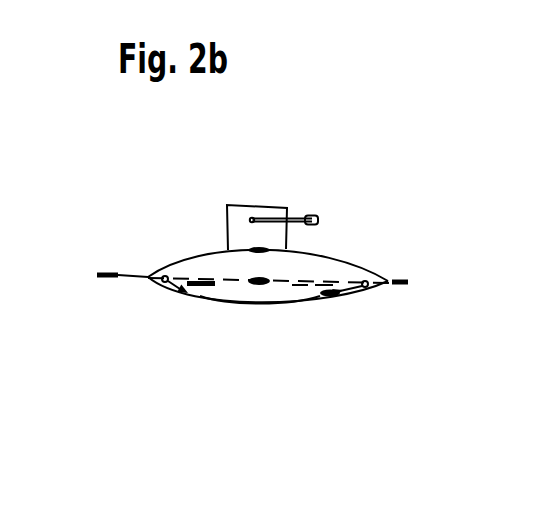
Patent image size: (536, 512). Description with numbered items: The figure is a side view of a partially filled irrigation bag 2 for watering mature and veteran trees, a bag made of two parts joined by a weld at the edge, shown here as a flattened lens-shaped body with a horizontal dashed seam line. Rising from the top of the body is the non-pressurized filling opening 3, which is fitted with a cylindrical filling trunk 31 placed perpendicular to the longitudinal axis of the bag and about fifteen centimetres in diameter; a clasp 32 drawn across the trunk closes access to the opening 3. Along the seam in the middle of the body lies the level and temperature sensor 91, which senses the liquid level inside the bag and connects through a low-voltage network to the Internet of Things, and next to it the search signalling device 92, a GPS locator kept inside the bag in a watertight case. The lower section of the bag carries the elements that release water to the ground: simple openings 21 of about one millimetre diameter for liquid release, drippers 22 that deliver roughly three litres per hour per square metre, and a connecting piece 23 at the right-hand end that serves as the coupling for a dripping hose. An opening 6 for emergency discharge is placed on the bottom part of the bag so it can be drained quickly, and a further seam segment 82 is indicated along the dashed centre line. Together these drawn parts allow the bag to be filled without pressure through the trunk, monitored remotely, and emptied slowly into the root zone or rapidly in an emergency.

The package body 2 is at (268, 276).
The non-pressurized filling opening 3 is at (260, 238).
The filling trunk 31 is at (232, 218).
The clasp 32 is at (306, 216).
The level and temperature sensor 91 is at (282, 279).
The dripper 22 is at (156, 289).
The search signalling device 92 is at (190, 297).
The simple openings 21 is at (262, 310).
The dashed seam segment 82 is at (307, 296).
The opening for emergency discharge 6 is at (338, 305).
The connecting piece 23 is at (373, 293).